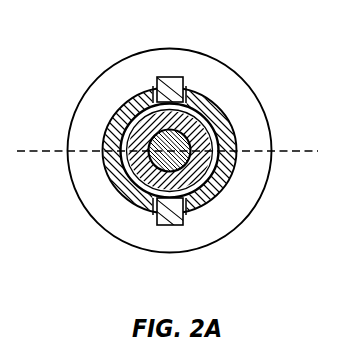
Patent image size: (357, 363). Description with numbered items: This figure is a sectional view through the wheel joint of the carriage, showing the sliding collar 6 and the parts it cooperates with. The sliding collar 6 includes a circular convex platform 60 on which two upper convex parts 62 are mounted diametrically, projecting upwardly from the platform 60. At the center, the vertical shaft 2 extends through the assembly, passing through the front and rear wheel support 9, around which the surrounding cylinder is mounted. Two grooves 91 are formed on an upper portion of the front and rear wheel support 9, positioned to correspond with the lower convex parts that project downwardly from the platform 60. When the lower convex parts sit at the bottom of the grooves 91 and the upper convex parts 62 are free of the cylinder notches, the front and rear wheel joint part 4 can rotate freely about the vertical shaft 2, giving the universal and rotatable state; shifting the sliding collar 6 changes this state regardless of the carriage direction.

The vertical shaft 2 is at (192, 142).
The front & rear wheel joint part 4 is at (200, 110).
The sliding collar 6 is at (225, 213).
The front & rear wheel support 9 is at (118, 122).
The circular convex platform 60 is at (242, 192).
The upper convex parts 62 is at (172, 215).
The grooves 91 is at (147, 212).